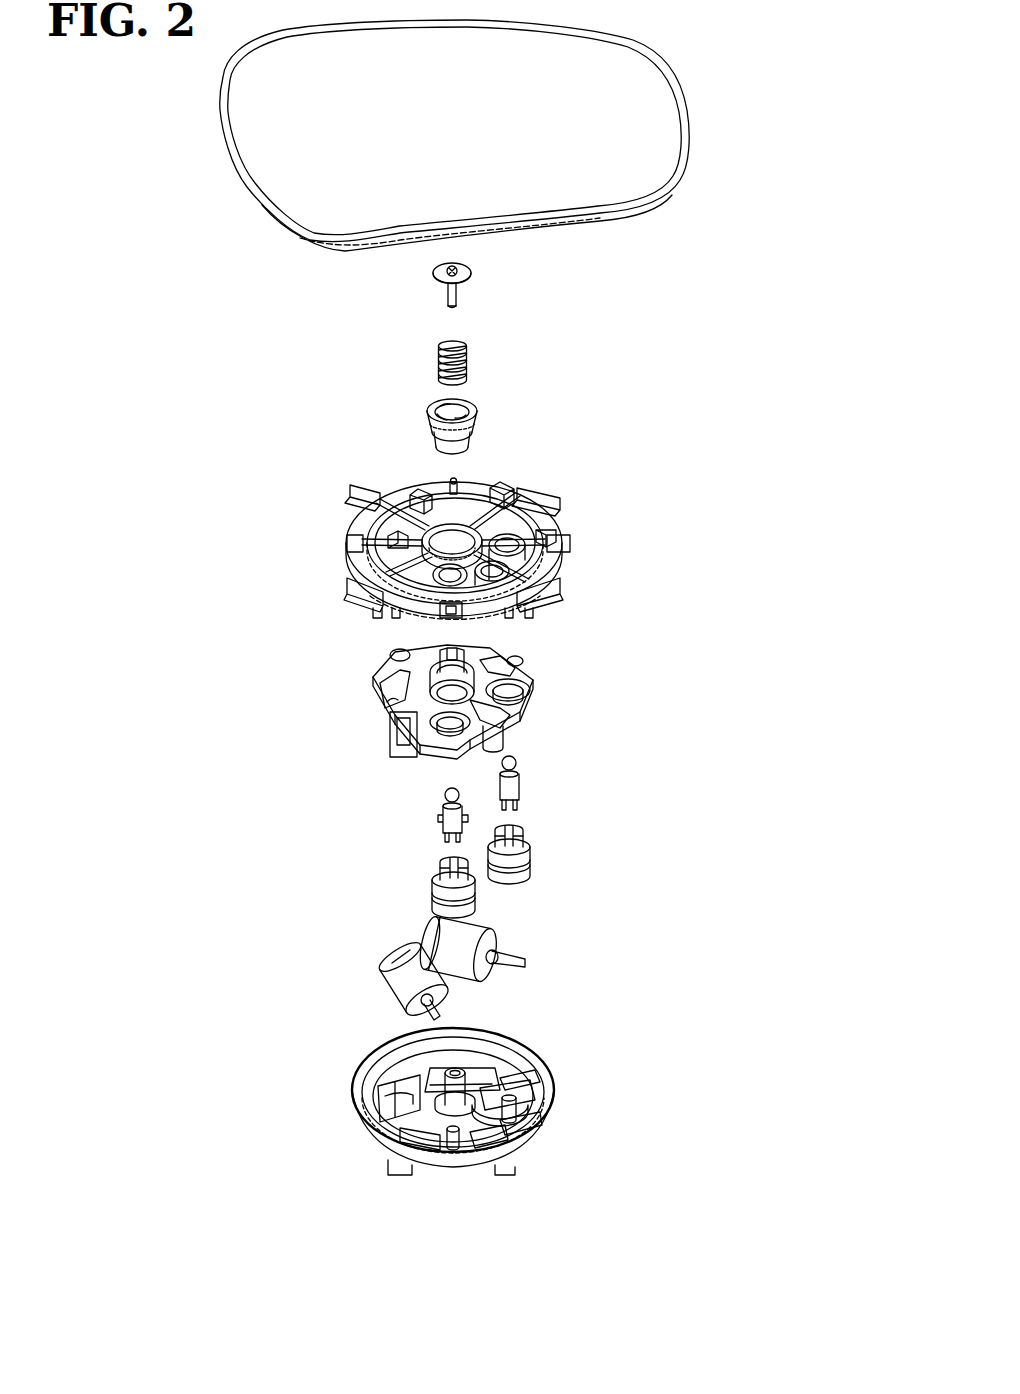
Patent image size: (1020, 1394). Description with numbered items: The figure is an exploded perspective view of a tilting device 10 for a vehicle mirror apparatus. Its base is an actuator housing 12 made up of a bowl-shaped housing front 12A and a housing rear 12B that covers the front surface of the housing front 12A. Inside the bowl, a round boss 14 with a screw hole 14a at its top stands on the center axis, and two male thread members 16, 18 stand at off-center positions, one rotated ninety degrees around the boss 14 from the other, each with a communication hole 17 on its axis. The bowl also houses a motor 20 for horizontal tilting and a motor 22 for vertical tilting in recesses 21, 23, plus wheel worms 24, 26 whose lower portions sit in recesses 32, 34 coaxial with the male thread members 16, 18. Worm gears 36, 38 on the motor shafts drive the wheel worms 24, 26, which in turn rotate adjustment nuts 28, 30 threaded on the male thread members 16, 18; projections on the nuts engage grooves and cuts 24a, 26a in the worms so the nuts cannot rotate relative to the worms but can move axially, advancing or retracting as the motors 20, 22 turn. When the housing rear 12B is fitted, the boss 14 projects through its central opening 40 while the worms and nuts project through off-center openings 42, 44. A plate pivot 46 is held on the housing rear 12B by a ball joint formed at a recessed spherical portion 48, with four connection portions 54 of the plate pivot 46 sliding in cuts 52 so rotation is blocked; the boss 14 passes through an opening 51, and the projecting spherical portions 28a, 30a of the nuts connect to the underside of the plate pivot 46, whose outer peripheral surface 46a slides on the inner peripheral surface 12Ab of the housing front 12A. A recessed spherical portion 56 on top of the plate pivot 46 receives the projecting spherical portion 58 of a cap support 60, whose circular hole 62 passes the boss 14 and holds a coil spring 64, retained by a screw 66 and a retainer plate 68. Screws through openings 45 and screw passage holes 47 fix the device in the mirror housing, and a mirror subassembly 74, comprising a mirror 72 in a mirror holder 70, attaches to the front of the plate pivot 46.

The tilting device 10 is at (689, 262).
The actuator housing 12 is at (762, 908).
The housing front 12A is at (570, 1059).
The housing rear 12B is at (550, 746).
The inner peripheral surface 12Ab is at (383, 1058).
The boss 14 is at (475, 1075).
The screw hole 14a is at (453, 1073).
The male thread member 16 is at (537, 1108).
The communication hole 17 is at (520, 1087).
The male thread member 18 is at (453, 1150).
The motor 20 is at (475, 933).
The recess 21 is at (498, 1077).
The motor 22 is at (390, 975).
The recess 23 is at (387, 1092).
The wheel worm 24 is at (553, 872).
The grooves and cuts 24a is at (530, 847).
The wheel worm 26 is at (412, 898).
The grooves and cuts 26a is at (458, 873).
The adjustment nut 28 is at (537, 797).
The projecting spherical portion 28a is at (520, 763).
The adjustment nut 30 is at (417, 825).
The projecting spherical portion 30a is at (443, 795).
The recess 32 is at (537, 1127).
The recess 34 is at (430, 1148).
The worm gear 36 is at (520, 957).
The worm gear 38 is at (417, 1017).
The opening 40 is at (407, 672).
The opening 42 is at (533, 680).
The opening 44 is at (445, 725).
The openings 45 is at (420, 498).
The plate pivot 46 is at (598, 510).
The outer peripheral surface 46a is at (475, 622).
The screw passage holes 47 is at (397, 663).
The recessed spherical portion 48 is at (473, 657).
The opening 51 is at (452, 522).
The cuts 52 is at (407, 653).
The connection portions 54 is at (458, 536).
The recessed spherical portion 56 is at (462, 538).
The projecting spherical portion 58 is at (447, 433).
The cap support 60 is at (497, 420).
The circular hole 62 is at (437, 402).
The coil spring 64 is at (467, 362).
The screw 66 is at (458, 267).
The retainer plate 68 is at (467, 282).
The mirror holder 70 is at (680, 107).
The mirror 72 is at (620, 83).
The mirror subassembly 74 is at (747, 27).